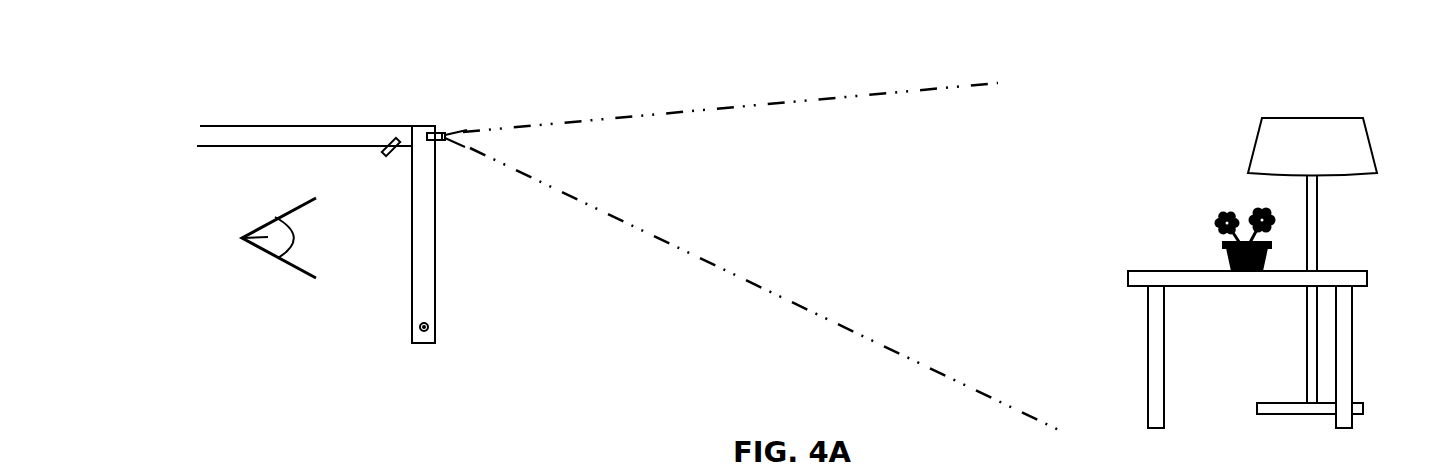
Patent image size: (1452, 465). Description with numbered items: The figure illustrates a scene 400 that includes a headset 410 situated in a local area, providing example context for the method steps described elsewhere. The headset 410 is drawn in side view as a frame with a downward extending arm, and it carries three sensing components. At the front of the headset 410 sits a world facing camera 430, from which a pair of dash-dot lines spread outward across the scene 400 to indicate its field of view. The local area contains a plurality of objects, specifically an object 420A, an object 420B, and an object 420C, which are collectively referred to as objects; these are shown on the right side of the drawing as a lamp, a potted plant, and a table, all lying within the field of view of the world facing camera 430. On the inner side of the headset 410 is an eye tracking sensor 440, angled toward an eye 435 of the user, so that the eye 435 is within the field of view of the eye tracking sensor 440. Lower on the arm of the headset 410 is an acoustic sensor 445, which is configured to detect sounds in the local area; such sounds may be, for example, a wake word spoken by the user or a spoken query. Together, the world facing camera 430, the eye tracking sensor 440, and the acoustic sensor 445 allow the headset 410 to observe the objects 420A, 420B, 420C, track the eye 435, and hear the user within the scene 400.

The scene 400 is at (165, 71).
The headset 410 is at (247, 138).
The world facing camera 430 is at (437, 140).
The eye 435 is at (243, 240).
The eye tracking sensor 440 is at (383, 154).
The acoustic sensor 445 is at (425, 332).
The object 420A is at (1280, 158).
The object 420B is at (1244, 222).
The object 420C is at (1155, 280).